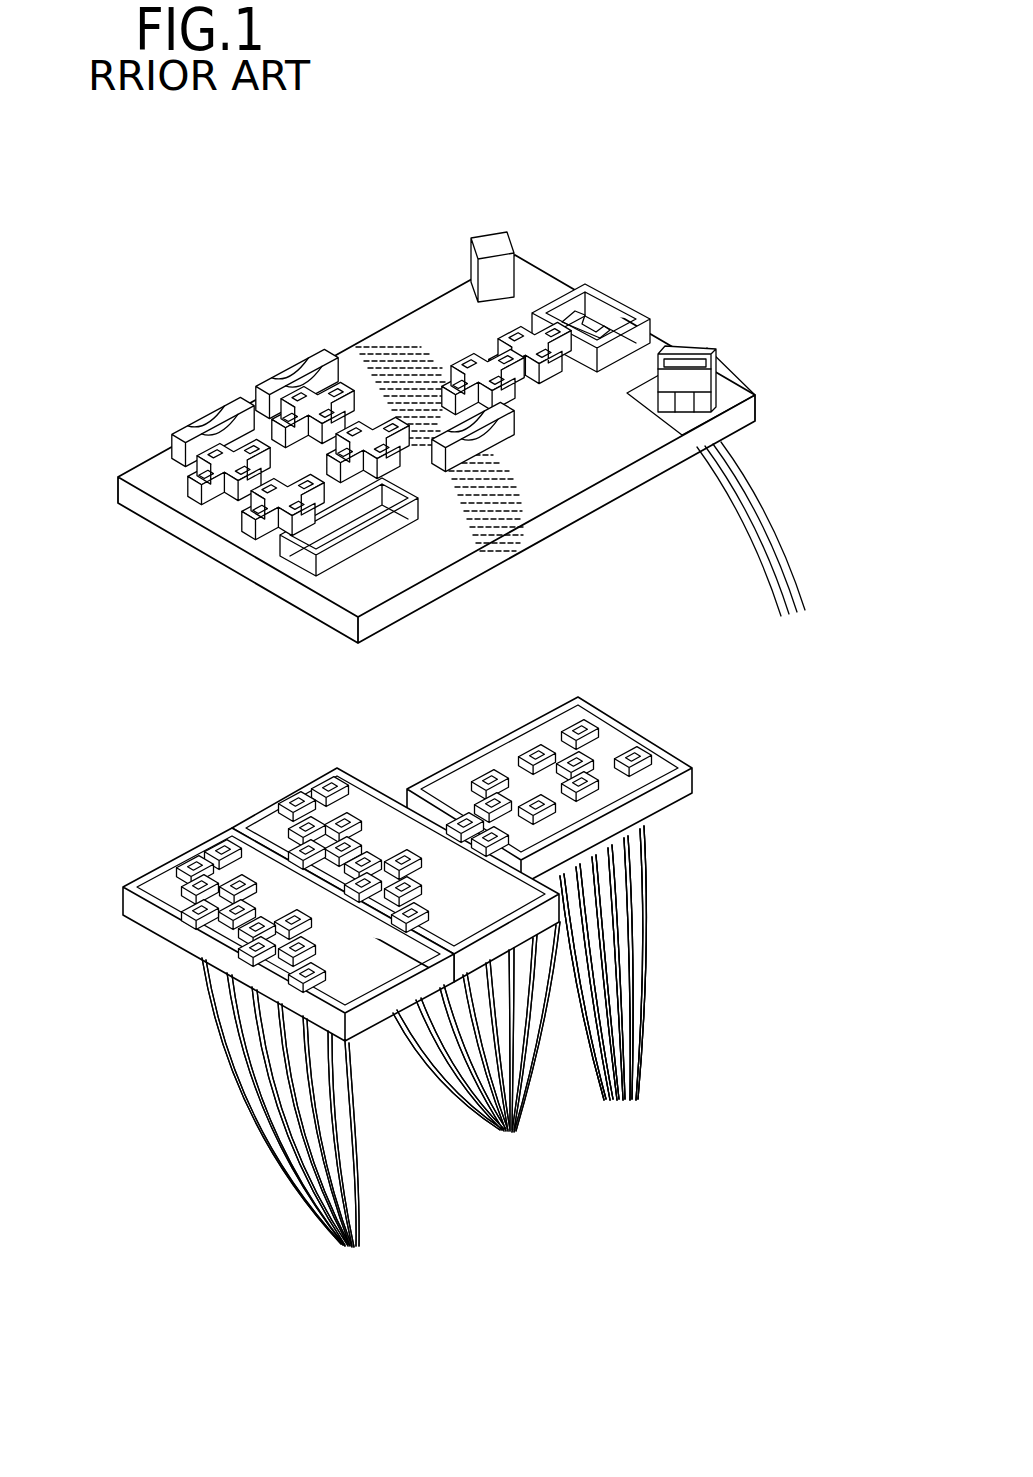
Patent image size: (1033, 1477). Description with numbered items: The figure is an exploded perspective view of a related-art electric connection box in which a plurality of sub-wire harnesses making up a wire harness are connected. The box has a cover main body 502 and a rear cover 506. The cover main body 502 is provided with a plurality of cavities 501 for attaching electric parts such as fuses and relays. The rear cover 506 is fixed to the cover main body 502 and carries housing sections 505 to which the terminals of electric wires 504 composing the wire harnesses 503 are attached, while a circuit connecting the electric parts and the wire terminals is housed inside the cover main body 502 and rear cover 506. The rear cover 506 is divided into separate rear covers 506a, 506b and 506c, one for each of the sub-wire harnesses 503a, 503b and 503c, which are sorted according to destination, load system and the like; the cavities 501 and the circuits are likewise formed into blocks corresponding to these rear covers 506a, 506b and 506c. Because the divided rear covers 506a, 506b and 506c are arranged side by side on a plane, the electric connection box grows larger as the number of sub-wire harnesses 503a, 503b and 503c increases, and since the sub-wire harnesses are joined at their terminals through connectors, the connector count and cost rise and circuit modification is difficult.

The cavities 501 is at (385, 415).
The cover main body 502 is at (654, 363).
The wire harnesses 503 is at (626, 1018).
The sub-wire harness 503a is at (299, 1198).
The sub-wire harness 503b is at (467, 1118).
The sub-wire harness 503c is at (578, 1098).
The electric wires 504 is at (266, 1110).
The housing sections 505 is at (340, 823).
The rear cover 506 is at (366, 822).
The rear cover for sub-wire harness 506a is at (172, 932).
The rear cover for sub-wire harness 506b is at (375, 784).
The rear cover for sub-wire harness 506c is at (527, 732).